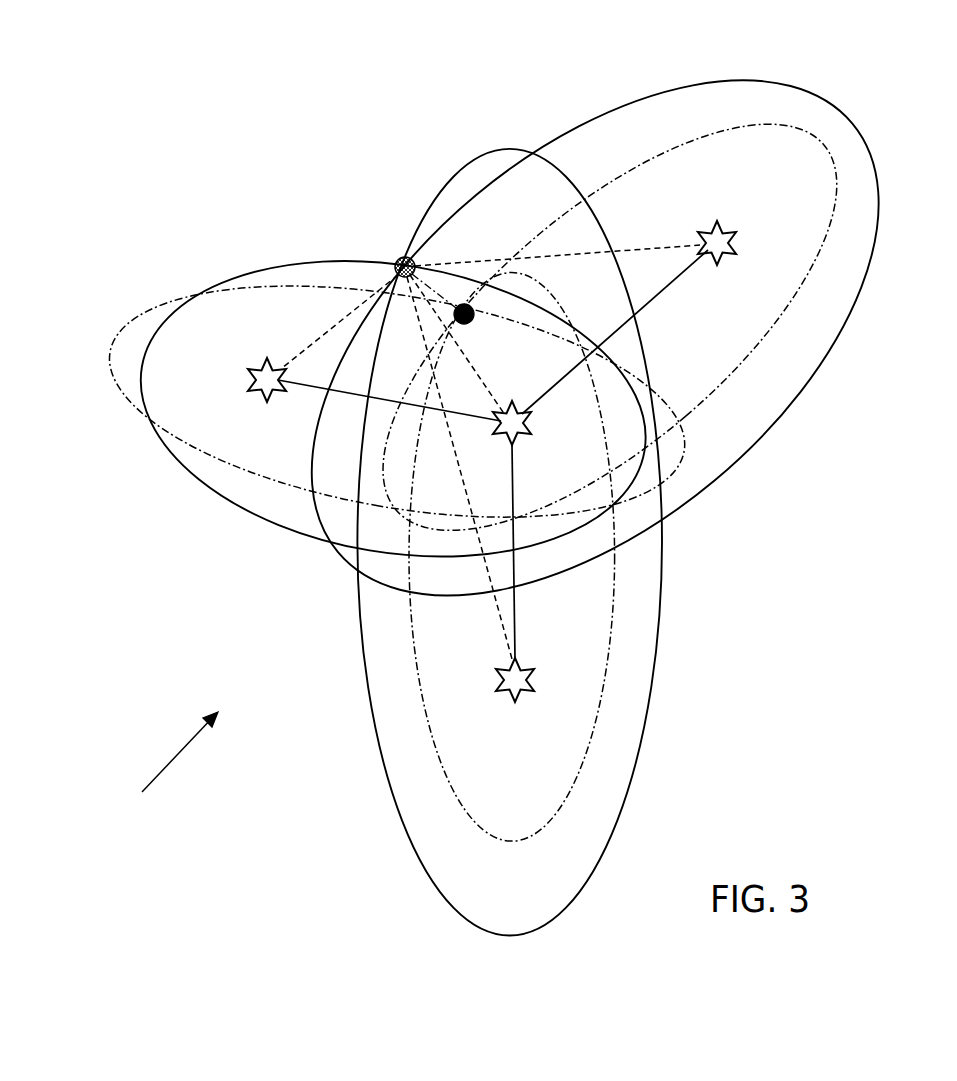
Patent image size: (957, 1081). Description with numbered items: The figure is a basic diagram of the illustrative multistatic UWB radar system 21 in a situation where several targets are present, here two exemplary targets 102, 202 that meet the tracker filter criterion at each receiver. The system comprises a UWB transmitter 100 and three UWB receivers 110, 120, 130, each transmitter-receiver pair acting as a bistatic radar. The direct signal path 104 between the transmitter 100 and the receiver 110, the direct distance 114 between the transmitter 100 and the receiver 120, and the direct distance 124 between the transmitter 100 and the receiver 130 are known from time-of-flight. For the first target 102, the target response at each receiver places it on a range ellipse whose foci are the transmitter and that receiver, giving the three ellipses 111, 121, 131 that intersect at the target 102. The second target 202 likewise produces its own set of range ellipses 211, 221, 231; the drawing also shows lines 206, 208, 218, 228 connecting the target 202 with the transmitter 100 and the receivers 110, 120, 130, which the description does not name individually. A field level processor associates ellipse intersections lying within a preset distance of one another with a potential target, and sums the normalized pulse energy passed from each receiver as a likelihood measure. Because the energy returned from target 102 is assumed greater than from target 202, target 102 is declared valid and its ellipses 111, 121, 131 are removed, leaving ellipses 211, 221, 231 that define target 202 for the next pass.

The multistatic UWB radar system 21 is at (161, 760).
The UWB transmitter 100 is at (527, 427).
The target 102 is at (465, 304).
The direct signal path 104 is at (310, 390).
The UWB receiver 110 is at (254, 369).
The ellipse 111 is at (125, 330).
The direct distance 114 is at (657, 298).
The UWB receiver 120 is at (722, 240).
The ellipse 121 is at (708, 135).
The direct distance 124 is at (520, 607).
The UWB receiver 130 is at (504, 697).
The ellipse 131 is at (597, 727).
The target 202 is at (400, 253).
The connection from reference position to point 100 206 is at (468, 363).
The connection from reference position to point 110 208 is at (303, 353).
The target ellipse 211 is at (277, 265).
The connection from reference position to point 120 218 is at (627, 245).
The target ellipse 221 is at (590, 118).
The connection from reference position to point 130 228 is at (500, 627).
The target ellipse 231 is at (660, 590).